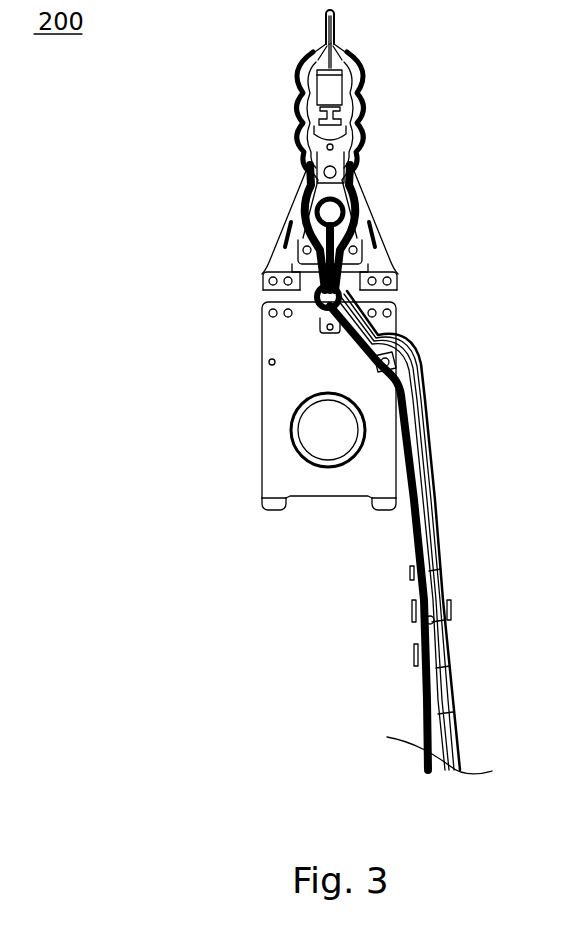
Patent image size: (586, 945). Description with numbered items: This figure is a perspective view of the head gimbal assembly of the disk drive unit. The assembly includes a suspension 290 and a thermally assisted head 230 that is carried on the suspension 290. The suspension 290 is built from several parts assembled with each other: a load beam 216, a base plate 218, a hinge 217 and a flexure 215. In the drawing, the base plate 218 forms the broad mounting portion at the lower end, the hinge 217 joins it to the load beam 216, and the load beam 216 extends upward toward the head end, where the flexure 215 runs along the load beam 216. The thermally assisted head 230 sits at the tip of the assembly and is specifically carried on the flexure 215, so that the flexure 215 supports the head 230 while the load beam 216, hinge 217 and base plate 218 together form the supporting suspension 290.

The thermally assisted head 230 is at (323, 89).
The flexure 215 is at (323, 189).
The load beam 216 is at (292, 239).
The suspension 290 is at (257, 269).
The hinge 217 is at (276, 296).
The base plate 218 is at (282, 383).